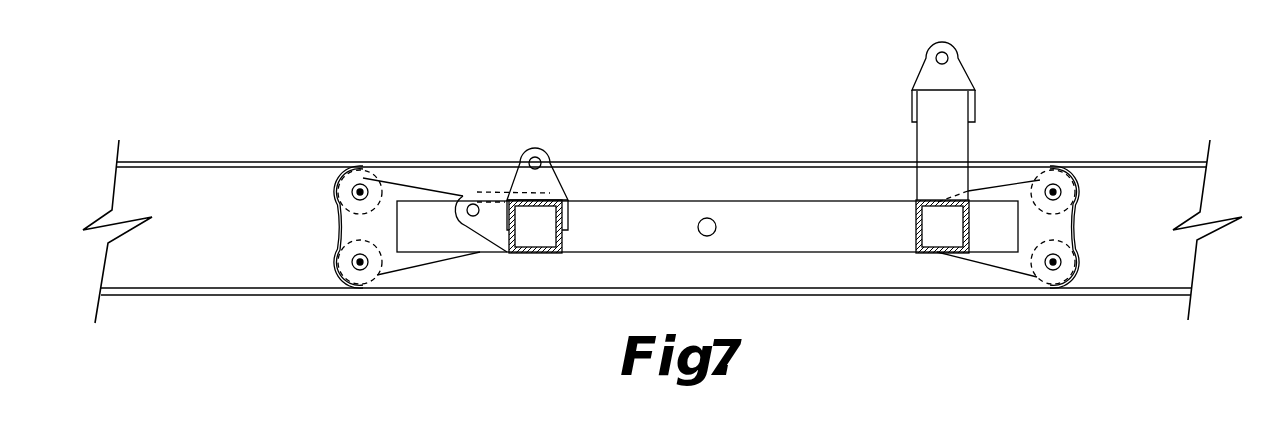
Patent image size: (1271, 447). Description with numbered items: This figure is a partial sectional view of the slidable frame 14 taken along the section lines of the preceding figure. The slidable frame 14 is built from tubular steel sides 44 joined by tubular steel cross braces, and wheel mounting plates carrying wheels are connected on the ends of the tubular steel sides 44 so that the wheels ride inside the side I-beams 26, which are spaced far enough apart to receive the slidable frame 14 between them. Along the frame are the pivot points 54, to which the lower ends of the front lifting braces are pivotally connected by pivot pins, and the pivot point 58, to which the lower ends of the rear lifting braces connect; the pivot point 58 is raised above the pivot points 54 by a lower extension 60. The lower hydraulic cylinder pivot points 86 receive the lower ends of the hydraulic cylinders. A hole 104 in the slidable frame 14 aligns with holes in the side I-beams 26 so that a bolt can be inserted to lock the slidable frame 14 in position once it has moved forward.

The slidable frame 14 is at (662, 187).
The side I-beams 26 is at (703, 162).
The tubular steel sides 44 is at (778, 236).
The pivot points 54 is at (471, 203).
The pivot point 58 is at (945, 47).
The lower extension 60 is at (917, 148).
The lower hydraulic cylinder pivot points 86 is at (530, 153).
The holes 104 is at (707, 236).